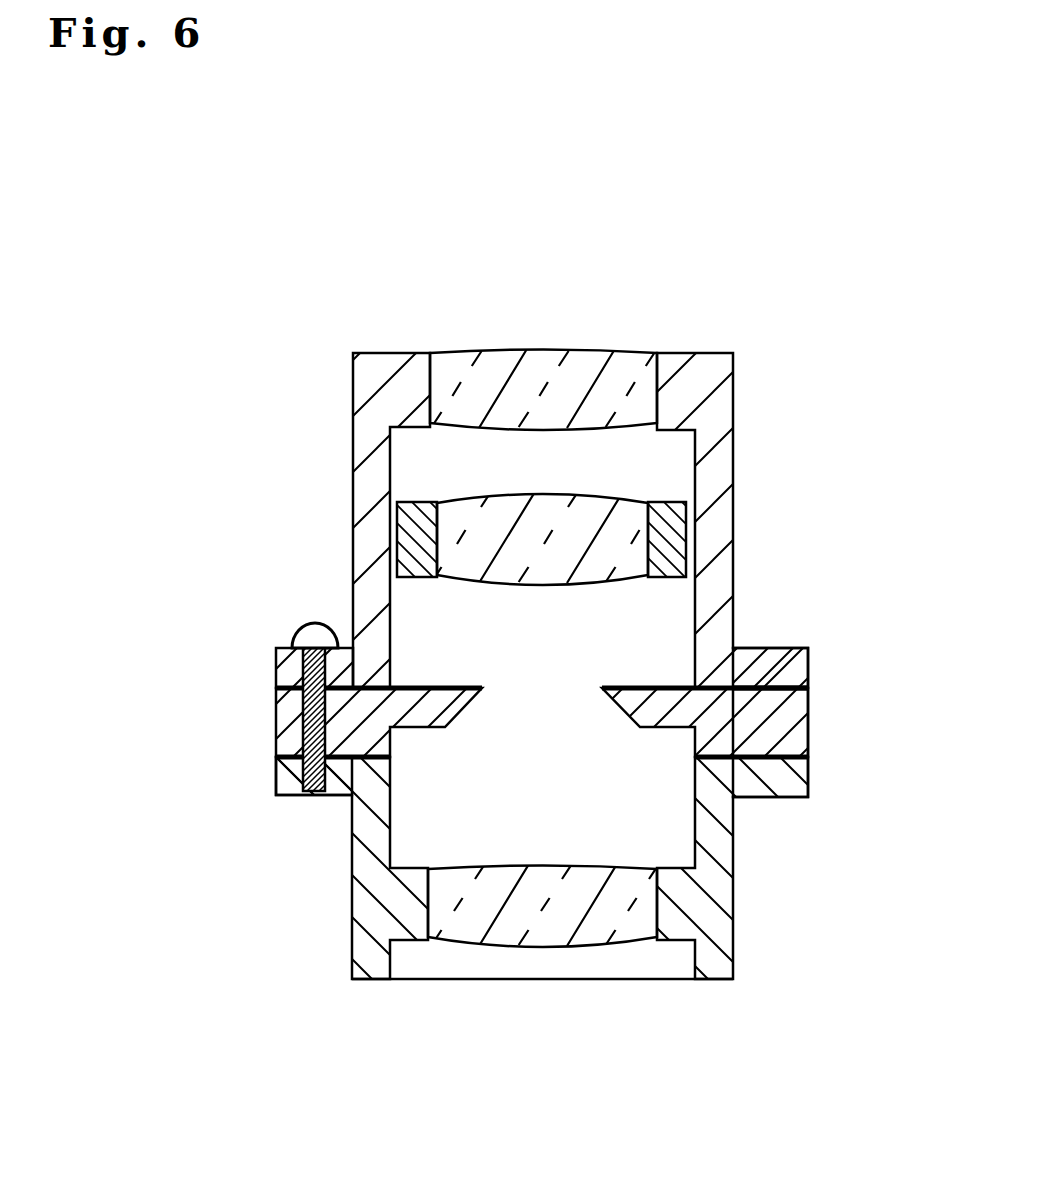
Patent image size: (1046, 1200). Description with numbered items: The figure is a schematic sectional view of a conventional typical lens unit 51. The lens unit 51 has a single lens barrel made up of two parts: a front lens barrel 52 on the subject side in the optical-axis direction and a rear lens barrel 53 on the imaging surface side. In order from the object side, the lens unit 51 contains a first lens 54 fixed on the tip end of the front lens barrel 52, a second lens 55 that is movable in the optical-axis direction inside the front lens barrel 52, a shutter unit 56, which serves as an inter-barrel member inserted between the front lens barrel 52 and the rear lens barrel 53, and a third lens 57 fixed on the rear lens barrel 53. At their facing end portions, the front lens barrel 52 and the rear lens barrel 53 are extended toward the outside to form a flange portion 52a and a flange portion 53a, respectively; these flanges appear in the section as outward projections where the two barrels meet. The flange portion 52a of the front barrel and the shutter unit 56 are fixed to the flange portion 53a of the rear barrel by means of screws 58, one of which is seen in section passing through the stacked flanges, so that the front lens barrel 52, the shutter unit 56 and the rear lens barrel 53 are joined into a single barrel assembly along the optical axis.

The lens unit 51 is at (407, 288).
The front lens barrel 52 is at (353, 473).
The flange portion 52a is at (277, 667).
The rear lens barrel 53 is at (350, 882).
The flange portion 53a is at (275, 778).
The first lens 54 is at (573, 355).
The second lens 55 is at (620, 502).
The shutter unit 56 is at (810, 712).
The third lens 57 is at (533, 932).
The screws 58 is at (307, 623).